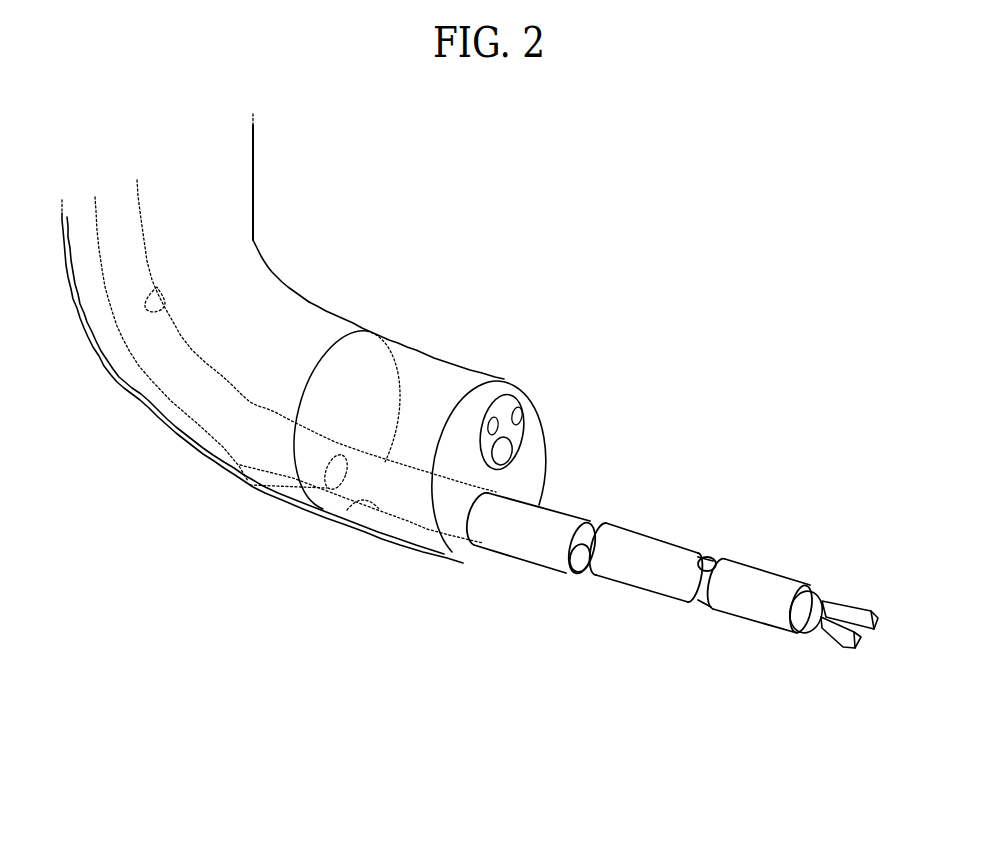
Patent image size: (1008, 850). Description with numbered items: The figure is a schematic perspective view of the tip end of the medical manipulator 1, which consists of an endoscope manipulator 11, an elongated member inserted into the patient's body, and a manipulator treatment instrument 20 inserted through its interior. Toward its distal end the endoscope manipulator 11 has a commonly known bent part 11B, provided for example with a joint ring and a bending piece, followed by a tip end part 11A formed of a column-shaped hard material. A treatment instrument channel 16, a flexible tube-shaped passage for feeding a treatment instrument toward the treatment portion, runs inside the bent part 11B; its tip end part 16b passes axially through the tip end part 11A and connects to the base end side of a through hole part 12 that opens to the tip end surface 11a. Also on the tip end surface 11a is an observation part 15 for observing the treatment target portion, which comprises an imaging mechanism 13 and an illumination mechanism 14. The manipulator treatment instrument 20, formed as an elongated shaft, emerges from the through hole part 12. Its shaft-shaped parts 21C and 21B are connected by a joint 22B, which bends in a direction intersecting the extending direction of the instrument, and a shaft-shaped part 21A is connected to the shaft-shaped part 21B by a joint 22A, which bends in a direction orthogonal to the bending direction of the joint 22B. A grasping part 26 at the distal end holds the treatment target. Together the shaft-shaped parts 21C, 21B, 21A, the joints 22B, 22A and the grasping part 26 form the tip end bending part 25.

The medical manipulator 1 is at (523, 329).
The endoscope manipulator 11 is at (303, 533).
The tip end part 11A is at (410, 367).
The bent part 11B is at (140, 387).
The tip end surface 11a is at (470, 550).
The through hole part 12 is at (373, 510).
The imaging mechanism 13 is at (503, 450).
The illumination mechanism 14 is at (497, 422).
The observation part 15 is at (531, 427).
The treatment instrument channel 16 is at (167, 307).
The tip end part of the treatment instrument channel 16b is at (253, 486).
The manipulator treatment instrument 20 is at (605, 496).
The shaft-shaped part 21A is at (758, 610).
The shaft-shaped part 21B is at (663, 583).
The shaft-shaped part 21C is at (532, 548).
The joint 22A is at (715, 553).
The joint 22B is at (603, 523).
The tip end bending part 25 is at (615, 651).
The grasping part 26 is at (839, 652).